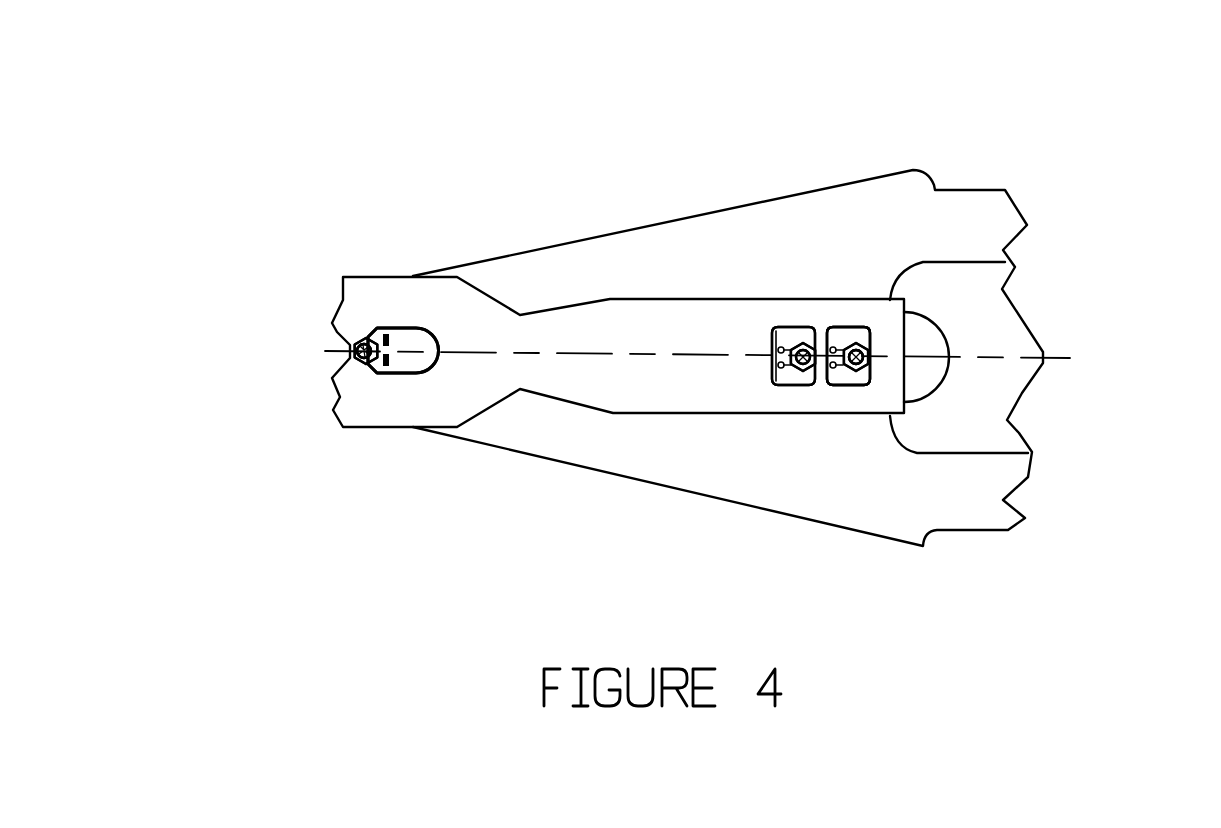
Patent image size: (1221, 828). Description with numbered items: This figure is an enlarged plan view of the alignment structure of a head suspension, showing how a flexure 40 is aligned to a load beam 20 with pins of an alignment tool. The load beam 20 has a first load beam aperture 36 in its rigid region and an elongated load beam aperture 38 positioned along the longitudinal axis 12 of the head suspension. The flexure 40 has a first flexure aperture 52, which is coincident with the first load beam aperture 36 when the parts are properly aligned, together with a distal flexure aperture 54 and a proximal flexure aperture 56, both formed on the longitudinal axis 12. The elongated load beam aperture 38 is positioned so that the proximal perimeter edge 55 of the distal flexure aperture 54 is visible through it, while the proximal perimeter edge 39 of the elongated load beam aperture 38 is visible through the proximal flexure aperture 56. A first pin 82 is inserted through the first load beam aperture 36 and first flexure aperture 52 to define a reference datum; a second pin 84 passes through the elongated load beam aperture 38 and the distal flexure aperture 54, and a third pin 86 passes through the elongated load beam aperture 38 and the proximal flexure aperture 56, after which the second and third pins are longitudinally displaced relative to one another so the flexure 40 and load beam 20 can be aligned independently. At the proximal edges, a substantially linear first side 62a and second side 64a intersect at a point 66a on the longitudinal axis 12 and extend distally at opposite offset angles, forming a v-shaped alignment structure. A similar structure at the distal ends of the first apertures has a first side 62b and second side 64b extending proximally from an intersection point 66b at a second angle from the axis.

The longitudinal axis 12 is at (1070, 358).
The load beam 20 is at (938, 203).
The first load beam aperture 36 is at (393, 329).
The elongated load beam aperture 38 is at (840, 335).
The proximal perimeter edge of elongated load beam aperture 39 is at (857, 333).
The flexure 40 is at (897, 408).
The first flexure aperture 52 is at (408, 375).
The distal flexure aperture 54 is at (780, 383).
The proximal perimeter edge of distal flexure aperture 55 is at (813, 330).
The proximal flexure aperture 56 is at (860, 380).
The first side 62a is at (803, 335).
The first side 62b is at (362, 345).
The second side 64a is at (805, 385).
The second side 64b is at (362, 360).
The intersection point 66a is at (830, 345).
The intersection point 66b is at (358, 343).
The first pin 82 is at (357, 351).
The second pin 84 is at (806, 383).
The third pin 86 is at (868, 363).